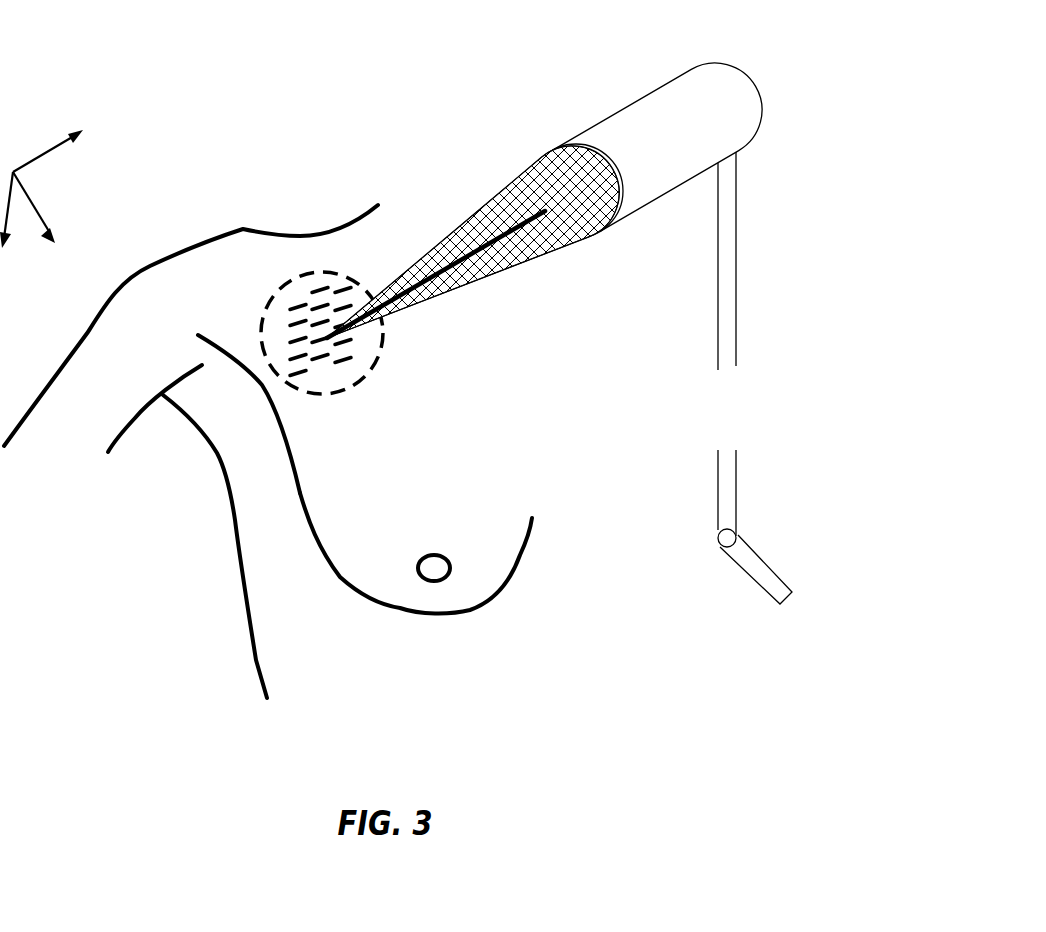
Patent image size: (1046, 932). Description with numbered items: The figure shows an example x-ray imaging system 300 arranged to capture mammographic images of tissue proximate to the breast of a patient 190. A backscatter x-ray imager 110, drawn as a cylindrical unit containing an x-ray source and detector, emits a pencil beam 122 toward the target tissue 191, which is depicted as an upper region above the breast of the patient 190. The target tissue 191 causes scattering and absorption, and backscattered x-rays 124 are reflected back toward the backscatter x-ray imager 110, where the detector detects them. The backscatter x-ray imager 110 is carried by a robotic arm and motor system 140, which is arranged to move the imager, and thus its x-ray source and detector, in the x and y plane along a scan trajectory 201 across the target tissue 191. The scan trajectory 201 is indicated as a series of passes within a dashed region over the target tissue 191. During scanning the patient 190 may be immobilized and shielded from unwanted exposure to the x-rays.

The x-ray imaging system 300 is at (67, 67).
The backscatter x-ray imager 110 is at (622, 65).
The pencil beam 122 is at (468, 240).
The backscattered x-rays 124 is at (588, 222).
The robotic arm and motor system 140 is at (773, 462).
The patient 190 is at (223, 203).
The target tissue 191 is at (258, 376).
The scan trajectory 201 is at (387, 410).